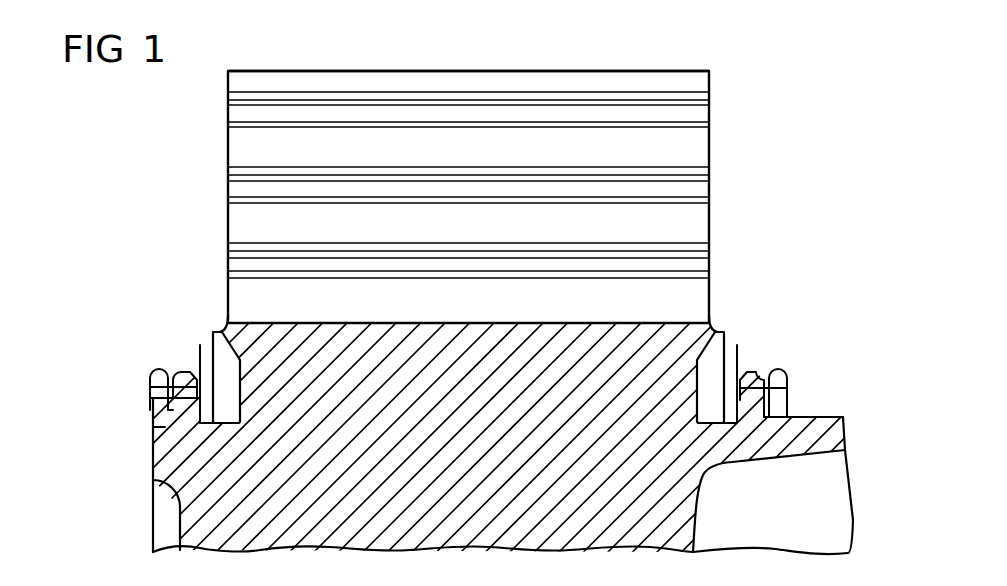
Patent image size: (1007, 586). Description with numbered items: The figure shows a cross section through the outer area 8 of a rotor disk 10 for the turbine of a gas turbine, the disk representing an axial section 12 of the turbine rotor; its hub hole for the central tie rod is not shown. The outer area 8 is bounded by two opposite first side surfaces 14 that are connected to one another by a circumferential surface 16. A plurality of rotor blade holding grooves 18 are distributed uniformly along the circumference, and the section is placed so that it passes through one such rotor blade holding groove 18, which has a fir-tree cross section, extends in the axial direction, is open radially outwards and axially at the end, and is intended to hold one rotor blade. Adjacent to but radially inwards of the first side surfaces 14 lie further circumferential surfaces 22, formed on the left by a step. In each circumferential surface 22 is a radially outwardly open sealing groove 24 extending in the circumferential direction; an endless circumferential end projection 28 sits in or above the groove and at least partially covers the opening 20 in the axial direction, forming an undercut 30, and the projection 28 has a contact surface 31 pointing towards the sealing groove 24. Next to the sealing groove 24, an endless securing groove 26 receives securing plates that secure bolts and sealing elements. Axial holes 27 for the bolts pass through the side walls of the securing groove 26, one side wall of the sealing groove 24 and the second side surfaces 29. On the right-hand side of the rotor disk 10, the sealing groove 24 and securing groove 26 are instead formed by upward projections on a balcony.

The outer area 8 is at (495, 171).
The rotor disk 10 is at (495, 172).
The axial section 12 is at (475, 172).
The first side surfaces 14 is at (228, 144).
The circumferential surface 16 is at (429, 69).
The rotor blade holding groove 18 is at (247, 190).
The opening of the sealing groove 20 is at (200, 345).
The further circumferential surface 22 is at (448, 347).
The sealing groove 24 is at (196, 367).
The securing groove 26 is at (153, 453).
The holes 27 is at (150, 397).
The end projection 28 is at (213, 333).
The second side surfaces 29 is at (150, 428).
The undercut 30 is at (468, 377).
The contact surface 31 is at (225, 372).